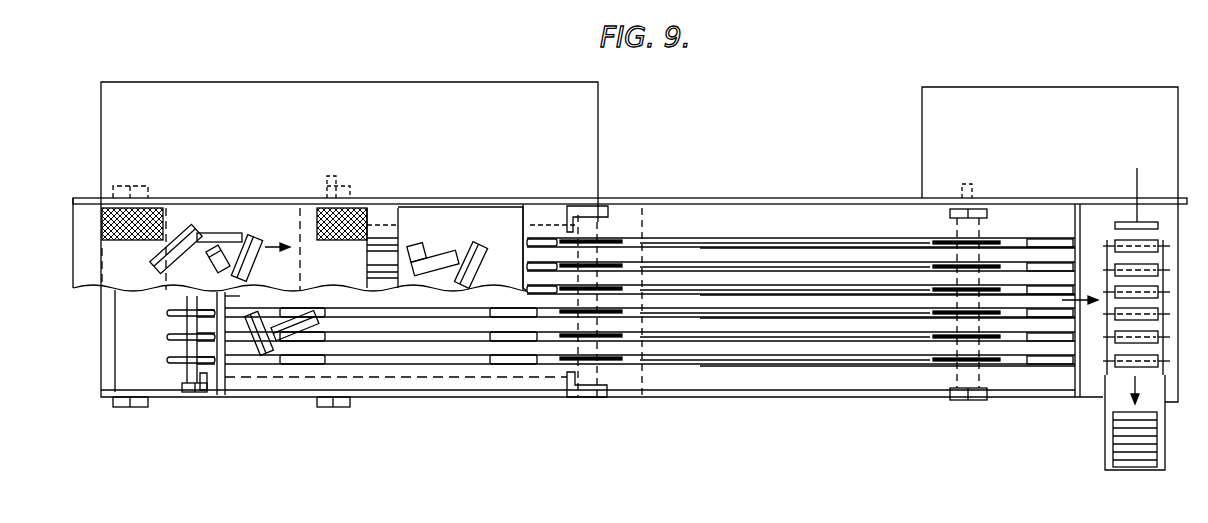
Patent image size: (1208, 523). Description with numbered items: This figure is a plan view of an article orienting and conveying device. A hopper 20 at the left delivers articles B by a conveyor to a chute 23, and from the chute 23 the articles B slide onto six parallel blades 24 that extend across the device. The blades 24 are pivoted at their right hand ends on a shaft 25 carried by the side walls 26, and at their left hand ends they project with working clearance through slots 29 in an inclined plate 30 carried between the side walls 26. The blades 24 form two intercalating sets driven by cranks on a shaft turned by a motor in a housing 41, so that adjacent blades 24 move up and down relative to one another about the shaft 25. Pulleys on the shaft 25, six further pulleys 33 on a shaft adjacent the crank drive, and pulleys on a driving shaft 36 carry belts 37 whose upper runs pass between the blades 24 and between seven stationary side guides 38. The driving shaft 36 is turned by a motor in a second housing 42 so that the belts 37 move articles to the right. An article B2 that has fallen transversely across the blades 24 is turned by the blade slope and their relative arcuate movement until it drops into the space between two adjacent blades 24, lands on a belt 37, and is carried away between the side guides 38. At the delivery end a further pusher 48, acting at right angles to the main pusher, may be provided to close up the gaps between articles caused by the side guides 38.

The housing 41 is at (398, 97).
The housing 42 is at (1108, 92).
The articles B is at (209, 232).
The article B2 is at (271, 360).
The hopper 20 is at (357, 216).
The chute 23 is at (437, 213).
The blades 24 is at (405, 343).
The shaft 25 is at (586, 214).
The side walls 26 is at (636, 213).
The slots 29 is at (238, 300).
The inclined plate 30 is at (224, 395).
The pulleys 33 is at (186, 371).
The driving shaft 36 is at (970, 196).
The belts 37 is at (776, 262).
The side guides 38 is at (712, 275).
The pusher 48 is at (1118, 222).